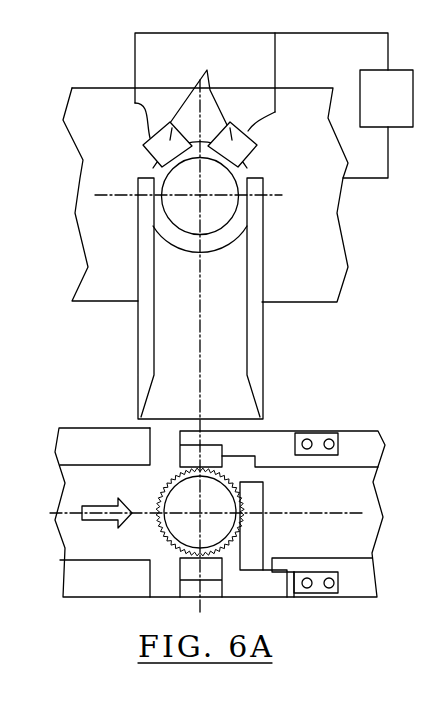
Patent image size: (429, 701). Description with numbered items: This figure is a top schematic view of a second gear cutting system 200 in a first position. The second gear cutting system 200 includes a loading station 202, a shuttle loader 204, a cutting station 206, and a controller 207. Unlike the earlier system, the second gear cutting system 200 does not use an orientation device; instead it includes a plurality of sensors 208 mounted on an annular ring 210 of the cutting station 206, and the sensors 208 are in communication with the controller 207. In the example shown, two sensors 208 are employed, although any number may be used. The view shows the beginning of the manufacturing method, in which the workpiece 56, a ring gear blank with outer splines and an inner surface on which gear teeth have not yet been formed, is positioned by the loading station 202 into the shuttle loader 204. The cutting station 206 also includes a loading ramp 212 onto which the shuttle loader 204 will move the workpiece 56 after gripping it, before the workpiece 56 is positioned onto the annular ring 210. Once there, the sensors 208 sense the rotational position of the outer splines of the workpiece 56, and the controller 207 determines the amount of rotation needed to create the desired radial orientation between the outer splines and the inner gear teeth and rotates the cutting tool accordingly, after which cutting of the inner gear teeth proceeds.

The second gear cutting system 200 is at (88, 82).
The loading station 202 is at (108, 448).
The shuttle loader 204 is at (280, 443).
The cutting station 206 is at (296, 104).
The controller 207 is at (404, 111).
The sensors 208 is at (205, 107).
The annular ring 210 is at (237, 227).
The loading ramp 212 is at (183, 373).
The workpiece 56 is at (229, 473).